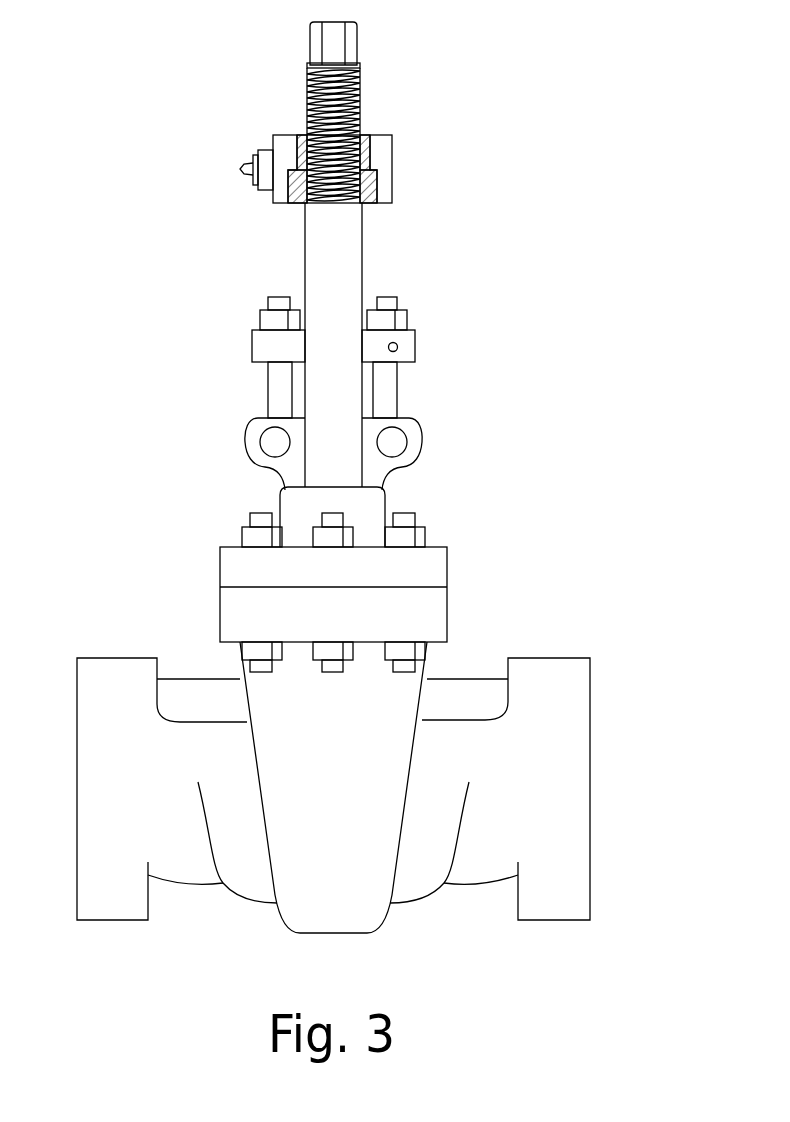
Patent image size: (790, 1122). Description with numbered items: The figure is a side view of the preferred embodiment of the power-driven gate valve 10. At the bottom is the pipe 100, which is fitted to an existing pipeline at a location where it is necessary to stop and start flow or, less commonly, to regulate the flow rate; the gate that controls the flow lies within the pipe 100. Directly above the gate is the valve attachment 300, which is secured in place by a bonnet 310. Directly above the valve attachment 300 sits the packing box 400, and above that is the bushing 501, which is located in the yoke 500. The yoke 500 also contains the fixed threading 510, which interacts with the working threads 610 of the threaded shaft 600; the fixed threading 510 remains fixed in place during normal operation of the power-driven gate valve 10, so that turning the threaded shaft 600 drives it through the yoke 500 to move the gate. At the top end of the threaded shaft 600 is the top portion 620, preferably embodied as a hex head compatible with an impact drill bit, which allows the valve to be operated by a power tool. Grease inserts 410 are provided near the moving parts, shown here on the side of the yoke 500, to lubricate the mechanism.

The power-driven gate valve 10 is at (372, 468).
The pipe 100 is at (542, 785).
The valve attachment 300 is at (375, 497).
The bonnet 310 is at (447, 567).
The packing box 400 is at (410, 347).
The grease inserts 410 is at (238, 170).
The yoke 500 is at (396, 180).
The bushing 501 is at (372, 205).
The fixed threading 510 is at (372, 140).
The threaded shaft 600 is at (358, 57).
The working threads 610 is at (356, 100).
The top portion 620 is at (317, 32).